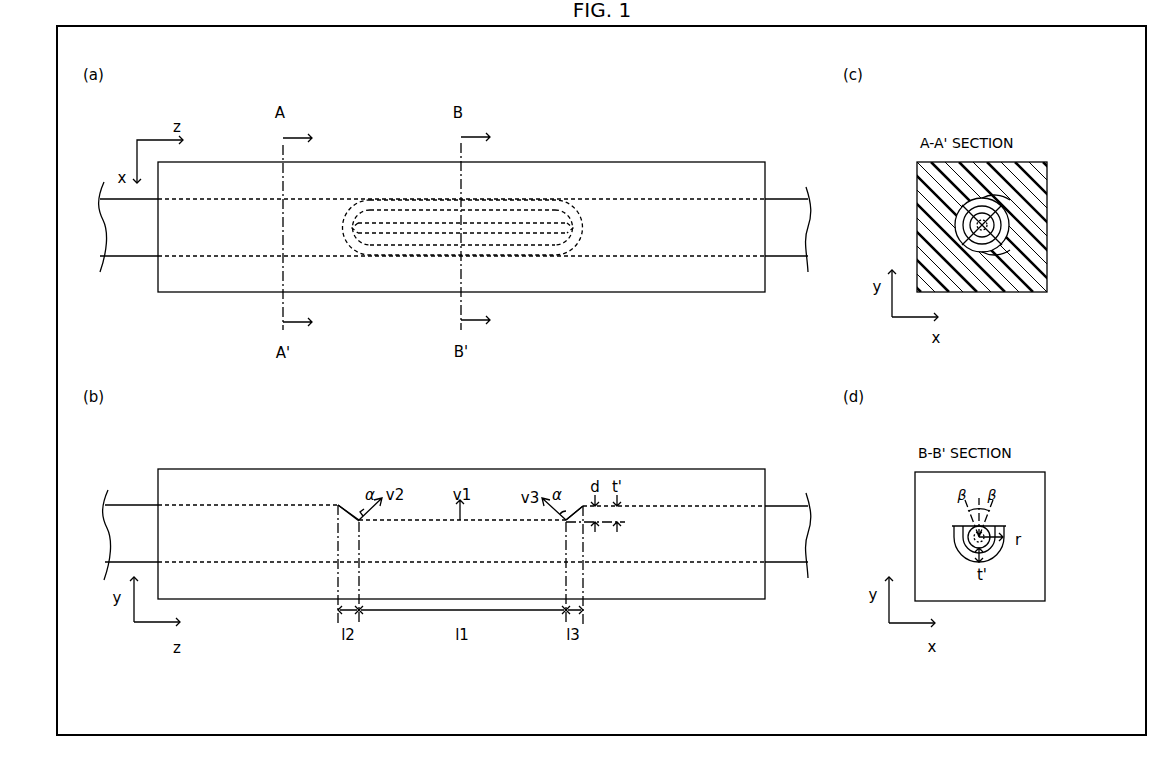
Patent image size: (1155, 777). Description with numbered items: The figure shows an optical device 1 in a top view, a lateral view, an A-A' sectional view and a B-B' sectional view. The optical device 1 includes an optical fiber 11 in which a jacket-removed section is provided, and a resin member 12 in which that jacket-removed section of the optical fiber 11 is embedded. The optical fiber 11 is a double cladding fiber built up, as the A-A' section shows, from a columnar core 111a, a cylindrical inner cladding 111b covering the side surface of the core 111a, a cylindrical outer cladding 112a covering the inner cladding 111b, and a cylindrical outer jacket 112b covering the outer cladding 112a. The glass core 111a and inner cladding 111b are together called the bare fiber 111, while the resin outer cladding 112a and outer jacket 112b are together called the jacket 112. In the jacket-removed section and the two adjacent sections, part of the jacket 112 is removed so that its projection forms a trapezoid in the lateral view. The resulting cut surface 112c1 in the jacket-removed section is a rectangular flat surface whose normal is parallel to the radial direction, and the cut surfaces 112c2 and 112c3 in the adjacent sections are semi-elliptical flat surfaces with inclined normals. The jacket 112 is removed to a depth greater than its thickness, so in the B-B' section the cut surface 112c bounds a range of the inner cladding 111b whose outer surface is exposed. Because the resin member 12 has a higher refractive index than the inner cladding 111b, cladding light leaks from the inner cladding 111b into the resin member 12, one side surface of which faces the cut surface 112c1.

The optical device 1 is at (783, 143).
The optical fiber 11 is at (554, 382).
The resin member 12 is at (656, 363).
The bare fiber 111 is at (745, 341).
The core 111a is at (927, 376).
The inner cladding 111b is at (745, 341).
The jacket 112 is at (733, 345).
The outer cladding 112a is at (723, 370).
The outer jacket 112b is at (732, 277).
The cut surface of the jacket 112c is at (733, 345).
The cut surface 112c1 is at (462, 323).
The cut surface 112c2 is at (358, 324).
The cut surface 112c3 is at (565, 324).